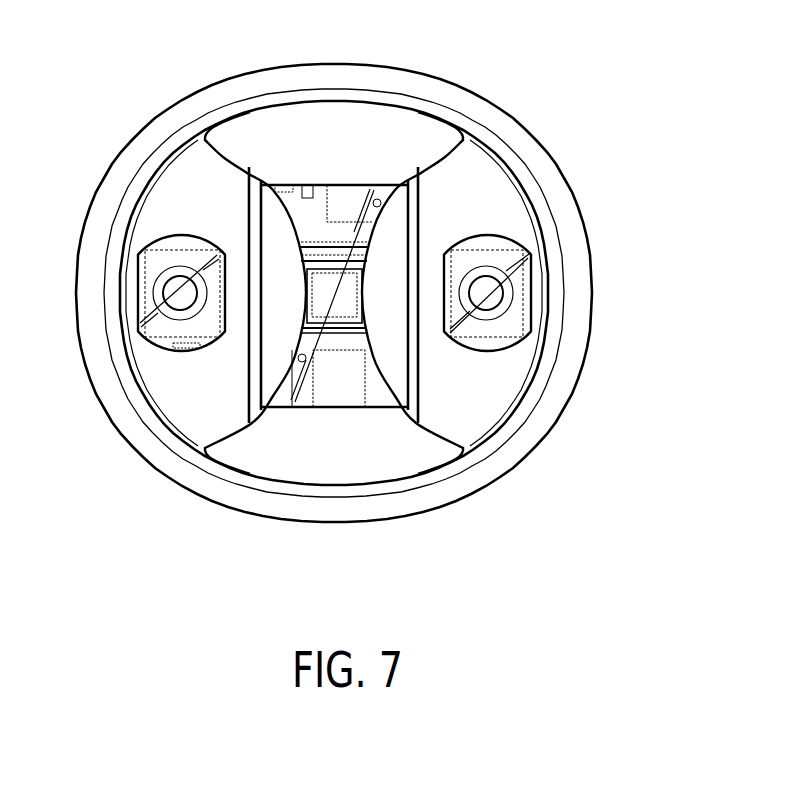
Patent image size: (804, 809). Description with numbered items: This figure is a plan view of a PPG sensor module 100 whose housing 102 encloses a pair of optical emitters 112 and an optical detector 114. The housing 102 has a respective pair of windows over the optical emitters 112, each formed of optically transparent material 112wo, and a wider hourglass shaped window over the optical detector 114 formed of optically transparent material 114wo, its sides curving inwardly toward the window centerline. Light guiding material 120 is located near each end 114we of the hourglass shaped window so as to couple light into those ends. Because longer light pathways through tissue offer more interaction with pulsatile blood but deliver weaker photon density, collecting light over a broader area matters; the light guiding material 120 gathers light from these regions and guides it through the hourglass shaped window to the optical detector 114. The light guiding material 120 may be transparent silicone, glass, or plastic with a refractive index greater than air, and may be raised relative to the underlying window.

The PPG sensor module 100 is at (590, 123).
The housing 102 is at (508, 117).
The optical emitters 112 is at (176, 291).
The optically transparent material 112wo is at (148, 267).
The optical detector 114 is at (320, 303).
The end of hourglass shaped window 114we is at (353, 185).
The optically transparent material 114wo is at (347, 390).
The light guiding material 120 is at (418, 132).